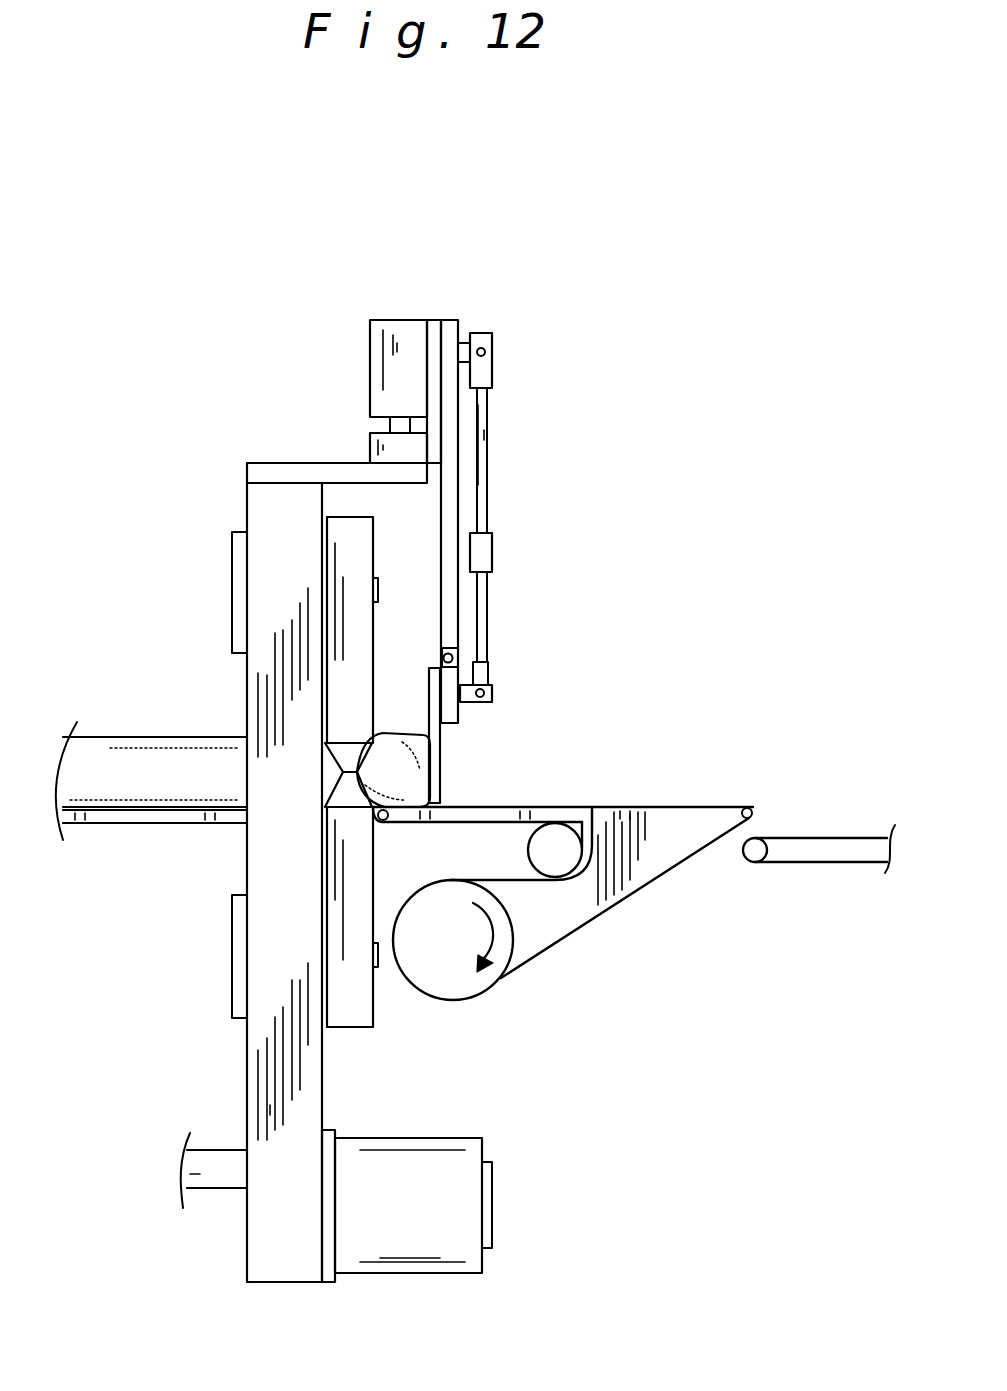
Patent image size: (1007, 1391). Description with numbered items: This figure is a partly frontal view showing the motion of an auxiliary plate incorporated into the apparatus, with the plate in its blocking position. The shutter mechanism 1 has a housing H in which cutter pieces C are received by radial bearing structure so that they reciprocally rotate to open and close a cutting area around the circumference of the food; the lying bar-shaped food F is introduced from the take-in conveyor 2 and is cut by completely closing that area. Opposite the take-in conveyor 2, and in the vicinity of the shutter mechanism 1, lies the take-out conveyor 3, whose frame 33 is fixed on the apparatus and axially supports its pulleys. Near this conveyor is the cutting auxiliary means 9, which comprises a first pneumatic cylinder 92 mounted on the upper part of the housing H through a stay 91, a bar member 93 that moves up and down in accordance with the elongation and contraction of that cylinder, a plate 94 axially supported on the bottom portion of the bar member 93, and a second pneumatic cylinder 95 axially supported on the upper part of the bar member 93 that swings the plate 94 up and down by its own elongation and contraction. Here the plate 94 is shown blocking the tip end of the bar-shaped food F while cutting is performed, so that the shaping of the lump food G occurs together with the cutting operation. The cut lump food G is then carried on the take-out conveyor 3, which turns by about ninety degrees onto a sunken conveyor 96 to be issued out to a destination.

The shutter mechanism 1 is at (215, 600).
The take-in conveyor 2 is at (97, 845).
The take-out conveyor 3 is at (613, 785).
The cutting auxiliary means 9 is at (532, 498).
The stay 91 is at (280, 472).
The first pneumatic cylinder 92 is at (377, 357).
The bar member 93 is at (448, 325).
The plate 94 is at (437, 757).
The second pneumatic cylinder 95 is at (488, 447).
The sunken conveyor 96 is at (818, 837).
The frame 33 is at (543, 917).
The housing H is at (263, 518).
The cutter pieces C is at (367, 565).
The lump food G is at (398, 745).
The bar-shaped food F is at (95, 753).